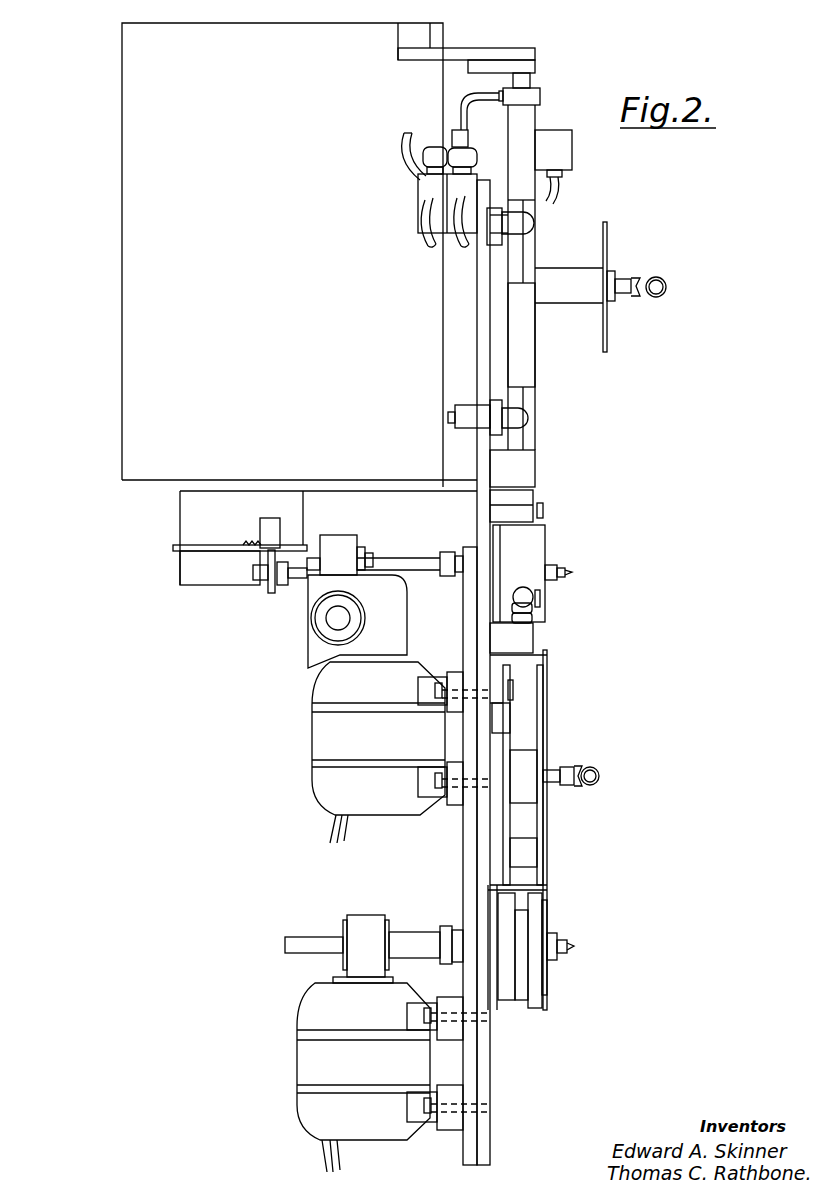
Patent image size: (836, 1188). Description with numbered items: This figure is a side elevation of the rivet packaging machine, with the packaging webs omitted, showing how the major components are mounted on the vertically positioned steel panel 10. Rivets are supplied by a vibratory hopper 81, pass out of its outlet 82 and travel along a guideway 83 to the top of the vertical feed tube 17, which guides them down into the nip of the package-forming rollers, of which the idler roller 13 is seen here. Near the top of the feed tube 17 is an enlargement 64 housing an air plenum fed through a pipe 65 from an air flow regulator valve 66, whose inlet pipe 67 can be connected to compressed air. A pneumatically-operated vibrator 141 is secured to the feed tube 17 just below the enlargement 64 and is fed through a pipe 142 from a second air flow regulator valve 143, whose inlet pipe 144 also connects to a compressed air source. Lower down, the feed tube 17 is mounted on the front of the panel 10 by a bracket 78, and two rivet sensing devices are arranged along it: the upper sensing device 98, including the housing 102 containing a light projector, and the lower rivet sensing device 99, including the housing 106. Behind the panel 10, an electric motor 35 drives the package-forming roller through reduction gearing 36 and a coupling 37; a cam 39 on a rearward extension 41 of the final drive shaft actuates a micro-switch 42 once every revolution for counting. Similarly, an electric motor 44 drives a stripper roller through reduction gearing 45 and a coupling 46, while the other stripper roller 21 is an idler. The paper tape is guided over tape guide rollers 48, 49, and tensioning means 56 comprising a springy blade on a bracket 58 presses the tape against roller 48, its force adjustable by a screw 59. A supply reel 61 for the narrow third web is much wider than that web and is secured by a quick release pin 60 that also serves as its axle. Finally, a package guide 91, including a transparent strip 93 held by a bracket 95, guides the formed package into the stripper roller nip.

The panel 10 is at (469, 637).
The package-forming roller 13 is at (530, 554).
The feed tube 17 is at (534, 366).
The stripper roller 21 is at (536, 1000).
The electric motor 35 is at (324, 729).
The reduction gearing 36 is at (322, 630).
The coupling 37 is at (420, 568).
The cam 39 is at (270, 595).
The rearward extension 41 is at (298, 586).
The micro-switch 42 is at (275, 530).
The electric motor 44 is at (325, 999).
The reduction gearing 45 is at (359, 918).
The coupling 46 is at (413, 937).
The tape guide roller 48 is at (541, 597).
The tape guide roller 49 is at (523, 508).
The tensioning means 56 is at (505, 608).
The bracket 58 is at (523, 636).
The screw 59 is at (526, 613).
The quick release pin 60 is at (617, 286).
The supply reel 61 is at (607, 250).
The enlargement 64 is at (541, 97).
The pipe 65 is at (465, 133).
The air flow regulator valve 66 is at (432, 241).
The inlet pipe 67 is at (464, 243).
The bracket 78 is at (503, 464).
The vibratory hopper 81 is at (298, 262).
The outlet 82 is at (428, 54).
The guideway 83 is at (487, 54).
The package guide 91 is at (550, 663).
The strip 93 is at (530, 708).
The bracket 95 is at (527, 851).
The upper sensing device 98 is at (534, 233).
The lower rivet sensing device 99 is at (537, 419).
The housing 102 is at (532, 223).
The housing 106 is at (513, 412).
The pneumatically-operated vibrator 141 is at (572, 163).
The pipe 142 is at (404, 136).
The air flow regulator valve 143 is at (421, 186).
The pipe 144 is at (422, 219).